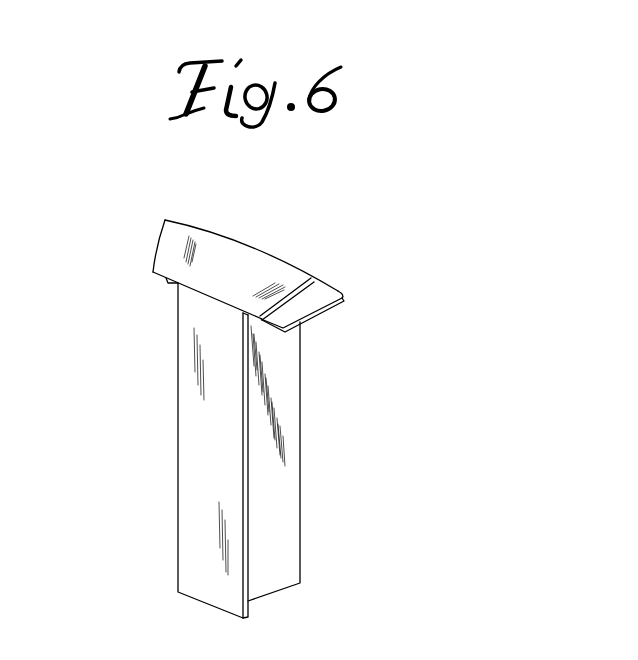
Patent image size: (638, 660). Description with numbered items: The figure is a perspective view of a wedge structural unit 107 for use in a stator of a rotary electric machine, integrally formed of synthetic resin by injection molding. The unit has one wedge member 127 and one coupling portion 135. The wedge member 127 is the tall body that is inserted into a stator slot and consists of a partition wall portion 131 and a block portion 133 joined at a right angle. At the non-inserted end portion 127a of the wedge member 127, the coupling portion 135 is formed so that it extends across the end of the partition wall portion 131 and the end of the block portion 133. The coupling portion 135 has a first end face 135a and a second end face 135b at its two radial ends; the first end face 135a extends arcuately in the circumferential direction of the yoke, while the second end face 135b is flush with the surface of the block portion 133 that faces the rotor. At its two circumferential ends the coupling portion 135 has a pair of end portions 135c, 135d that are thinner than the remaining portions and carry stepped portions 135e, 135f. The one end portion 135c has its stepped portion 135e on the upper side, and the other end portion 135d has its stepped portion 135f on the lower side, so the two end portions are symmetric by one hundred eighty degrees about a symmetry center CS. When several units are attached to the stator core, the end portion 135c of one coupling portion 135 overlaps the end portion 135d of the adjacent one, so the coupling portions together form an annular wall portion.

The wedge structural unit 107 is at (186, 216).
The coupling portion 135 is at (238, 275).
The first end face 135a is at (272, 254).
The symmetry center CS is at (203, 294).
The other end portion 135d is at (170, 237).
The second end face 135b is at (188, 286).
The stepped portion 135f is at (160, 275).
The stepped portion 135e is at (318, 292).
The one end portion 135c is at (292, 307).
The wedge member 127 is at (309, 422).
The non-inserted end portion 127a is at (216, 300).
The block portion 133 is at (198, 520).
The partition wall portion 131 is at (284, 462).